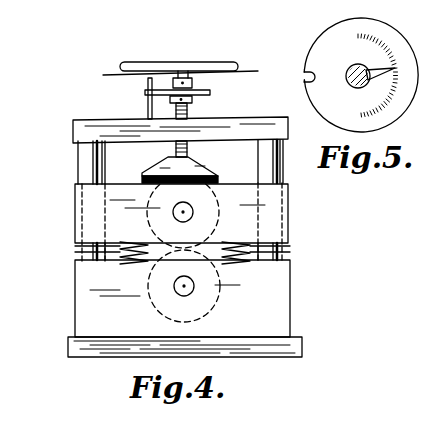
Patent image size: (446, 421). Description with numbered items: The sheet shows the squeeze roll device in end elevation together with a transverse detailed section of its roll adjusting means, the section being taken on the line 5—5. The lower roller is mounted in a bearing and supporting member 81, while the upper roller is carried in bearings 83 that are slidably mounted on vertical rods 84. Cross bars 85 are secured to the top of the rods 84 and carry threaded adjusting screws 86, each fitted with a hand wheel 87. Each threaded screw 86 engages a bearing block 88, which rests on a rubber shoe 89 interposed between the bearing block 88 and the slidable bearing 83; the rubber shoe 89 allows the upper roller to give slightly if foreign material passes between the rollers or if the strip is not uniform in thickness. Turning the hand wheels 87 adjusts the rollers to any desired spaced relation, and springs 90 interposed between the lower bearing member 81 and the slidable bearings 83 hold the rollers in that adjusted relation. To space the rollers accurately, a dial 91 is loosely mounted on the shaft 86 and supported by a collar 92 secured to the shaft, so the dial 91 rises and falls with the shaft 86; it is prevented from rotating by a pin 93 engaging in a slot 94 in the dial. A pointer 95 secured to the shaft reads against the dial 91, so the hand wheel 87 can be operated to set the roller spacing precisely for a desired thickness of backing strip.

In FIG. 4, the section line 5 is at (104, 72).
In FIG. 4, the bearing and supporting member 81 is at (290, 331).
In FIG. 4, the bearings 83 is at (118, 212).
In FIG. 4, the vertical rods 84 is at (86, 165).
In FIG. 4, the cross bars 85 is at (108, 120).
In FIG. 4, the threaded adjusting screw 86 is at (188, 113).
In FIG. 4, the hand wheel 87 is at (222, 62).
In FIG. 4, the bearing block 88 is at (206, 168).
In FIG. 4, the rubber shoe 89 is at (218, 181).
In FIG. 4, the springs 90 is at (120, 250).
In FIG. 4, the dial 91 is at (210, 92).
In FIG. 5, the dial 91 is at (304, 88).
In FIG. 4, the collar 92 is at (192, 100).
In FIG. 4, the pin 93 is at (148, 81).
In FIG. 5, the pin 93 is at (304, 77).
In FIG. 5, the slot 94 is at (304, 71).
In FIG. 4, the pointer 95 is at (193, 87).
In FIG. 5, the pointer 95 is at (380, 73).